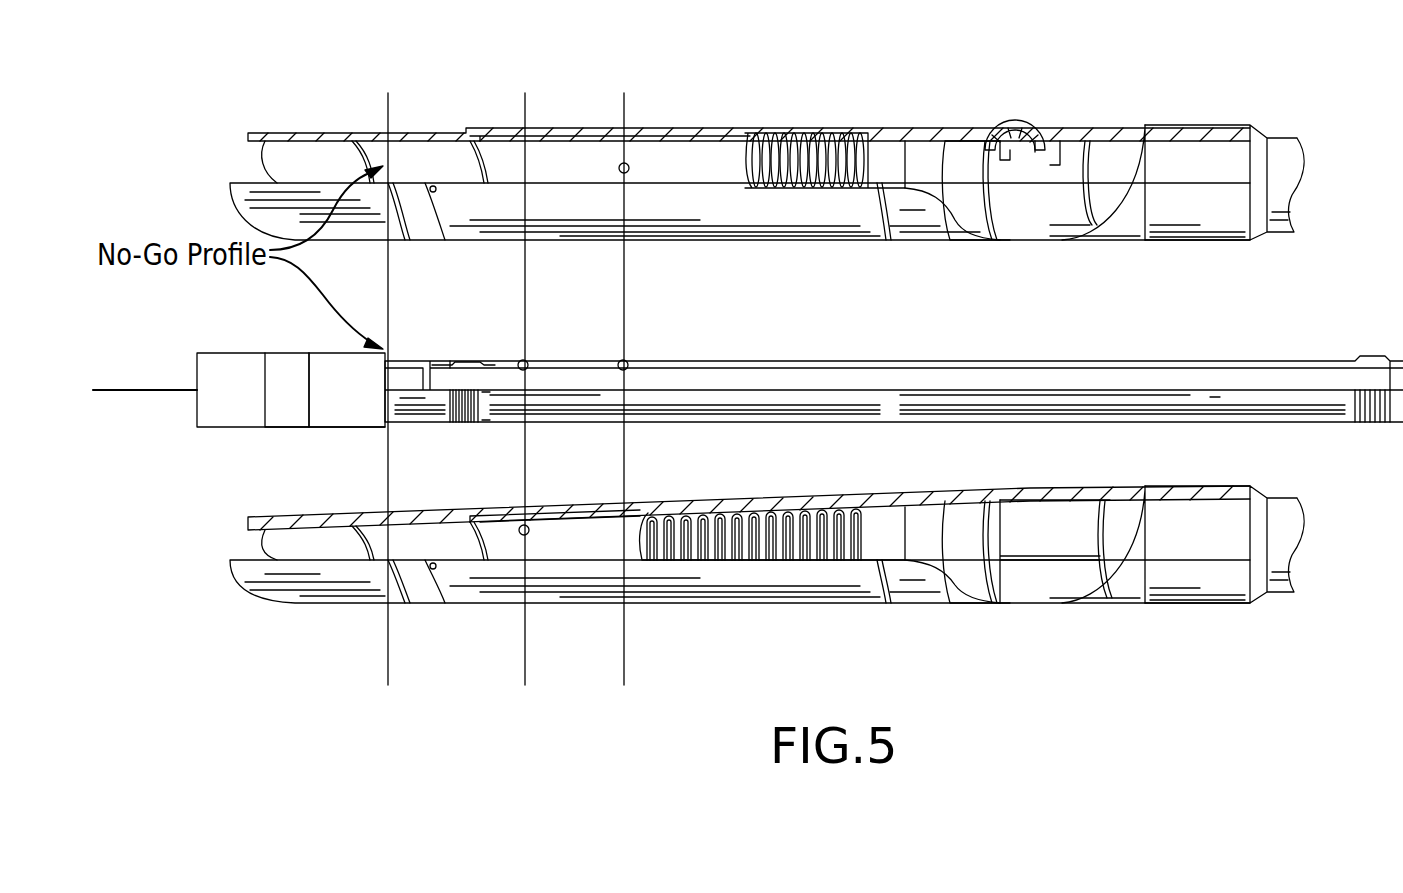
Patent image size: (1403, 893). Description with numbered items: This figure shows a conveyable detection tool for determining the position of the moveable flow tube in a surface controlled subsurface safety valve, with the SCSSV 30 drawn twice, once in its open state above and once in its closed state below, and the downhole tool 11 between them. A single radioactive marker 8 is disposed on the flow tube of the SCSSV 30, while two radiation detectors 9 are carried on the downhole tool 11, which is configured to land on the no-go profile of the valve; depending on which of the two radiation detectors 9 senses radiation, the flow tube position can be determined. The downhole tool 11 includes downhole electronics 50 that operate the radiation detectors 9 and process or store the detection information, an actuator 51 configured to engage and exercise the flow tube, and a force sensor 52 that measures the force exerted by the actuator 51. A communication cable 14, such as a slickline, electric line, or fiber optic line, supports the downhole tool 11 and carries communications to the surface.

The radioactive marker 8 is at (620, 163).
The radiation detector 9 is at (520, 360).
The downhole tool 11 is at (1097, 360).
The communication cable 14 is at (150, 394).
The SCSSV 30 is at (920, 127).
The downhole electronics 50 is at (231, 359).
The actuator 51 is at (335, 413).
The force sensor 52 is at (282, 415).